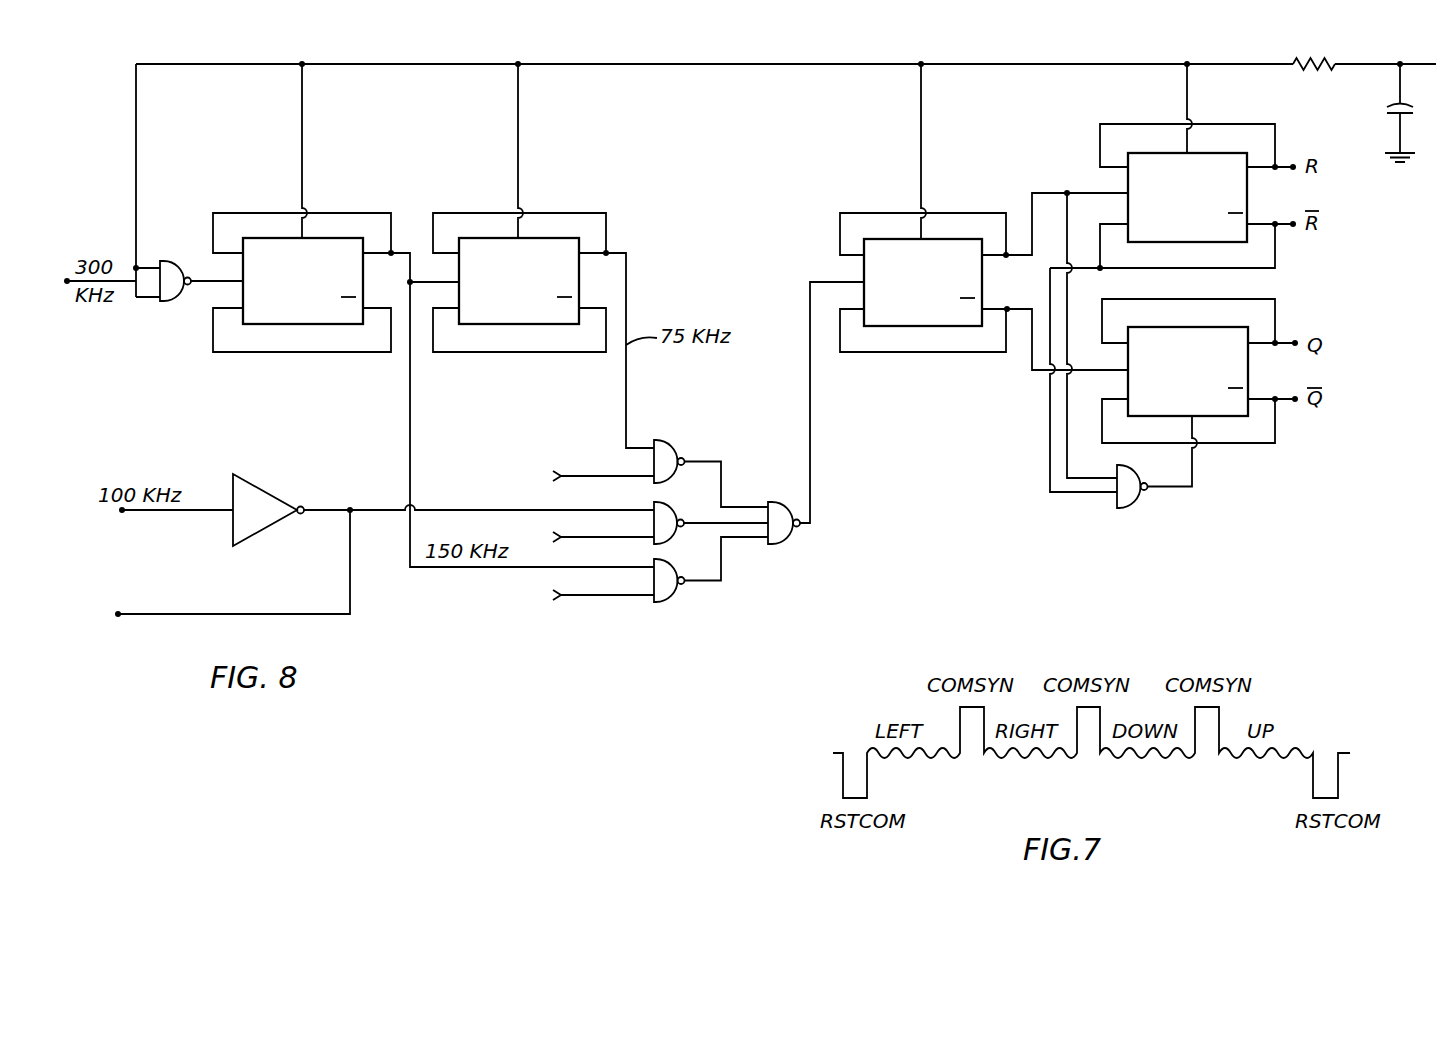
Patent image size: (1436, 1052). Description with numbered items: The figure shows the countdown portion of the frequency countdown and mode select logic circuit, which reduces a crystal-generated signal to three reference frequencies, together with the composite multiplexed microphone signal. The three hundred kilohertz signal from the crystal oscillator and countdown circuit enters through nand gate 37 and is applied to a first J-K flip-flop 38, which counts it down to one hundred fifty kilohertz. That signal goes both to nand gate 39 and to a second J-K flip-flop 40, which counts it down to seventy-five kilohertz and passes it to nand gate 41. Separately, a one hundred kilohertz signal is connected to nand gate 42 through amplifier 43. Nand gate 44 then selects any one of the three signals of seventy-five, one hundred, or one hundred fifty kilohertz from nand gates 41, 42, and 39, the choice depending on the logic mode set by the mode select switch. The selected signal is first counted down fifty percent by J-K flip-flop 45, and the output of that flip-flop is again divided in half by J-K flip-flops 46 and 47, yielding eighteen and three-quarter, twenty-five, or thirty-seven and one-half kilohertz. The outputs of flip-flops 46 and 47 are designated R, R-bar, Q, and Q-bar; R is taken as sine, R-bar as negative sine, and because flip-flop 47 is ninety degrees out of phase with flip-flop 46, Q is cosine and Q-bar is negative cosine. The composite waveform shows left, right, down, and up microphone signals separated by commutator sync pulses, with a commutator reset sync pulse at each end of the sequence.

The nand gate 37 is at (167, 305).
The first J-K flip-flop 38 is at (305, 325).
The nand gate 39 is at (673, 597).
The second J-K flip-flop 40 is at (530, 325).
The nand gate 41 is at (668, 443).
The nand gate 42 is at (673, 507).
The amplifier 43 is at (268, 492).
The nand gate 44 is at (783, 540).
The J-K flip-flop 45 is at (865, 265).
The J-K flip-flop 46 is at (1128, 178).
The J-K flip-flop 47 is at (1232, 417).